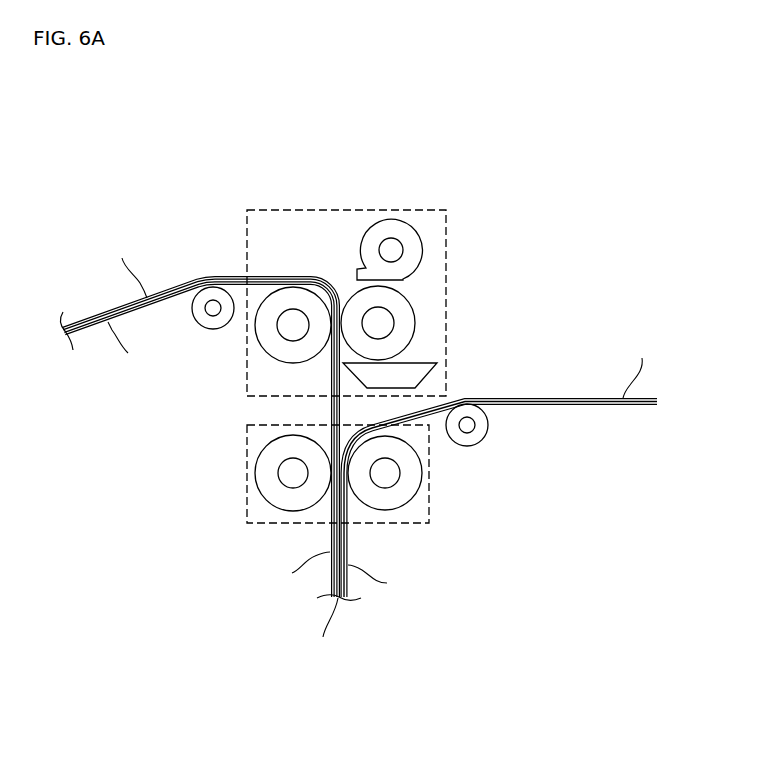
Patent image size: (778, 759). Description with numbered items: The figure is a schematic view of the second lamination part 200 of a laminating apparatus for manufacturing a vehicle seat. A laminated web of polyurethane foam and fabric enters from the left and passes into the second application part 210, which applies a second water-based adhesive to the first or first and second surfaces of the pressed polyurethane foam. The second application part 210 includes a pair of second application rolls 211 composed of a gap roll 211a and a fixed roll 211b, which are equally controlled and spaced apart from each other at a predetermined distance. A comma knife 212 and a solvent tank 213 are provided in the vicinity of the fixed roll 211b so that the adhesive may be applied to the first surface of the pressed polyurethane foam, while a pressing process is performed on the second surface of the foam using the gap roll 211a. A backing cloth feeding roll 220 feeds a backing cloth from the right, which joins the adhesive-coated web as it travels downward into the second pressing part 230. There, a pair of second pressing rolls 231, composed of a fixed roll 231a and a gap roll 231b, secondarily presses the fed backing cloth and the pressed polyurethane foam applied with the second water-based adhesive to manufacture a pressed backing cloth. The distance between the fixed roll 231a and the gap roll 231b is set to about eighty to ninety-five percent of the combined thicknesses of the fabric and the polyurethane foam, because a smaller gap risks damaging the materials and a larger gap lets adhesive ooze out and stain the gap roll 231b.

The second lamination part 200 is at (232, 136).
The second application part 210 is at (466, 213).
The pair of second application rolls 211 is at (522, 272).
The gap roll 211a is at (318, 333).
The fixed roll 211b is at (403, 312).
The comma knife 212 is at (390, 212).
The solvent tank 213 is at (417, 373).
The backing cloth feeding roll 220 is at (489, 423).
The second pressing part 230 is at (236, 509).
The pair of second pressing rolls 231 is at (567, 442).
The fixed roll 231a is at (313, 486).
The gap roll 231b is at (410, 470).